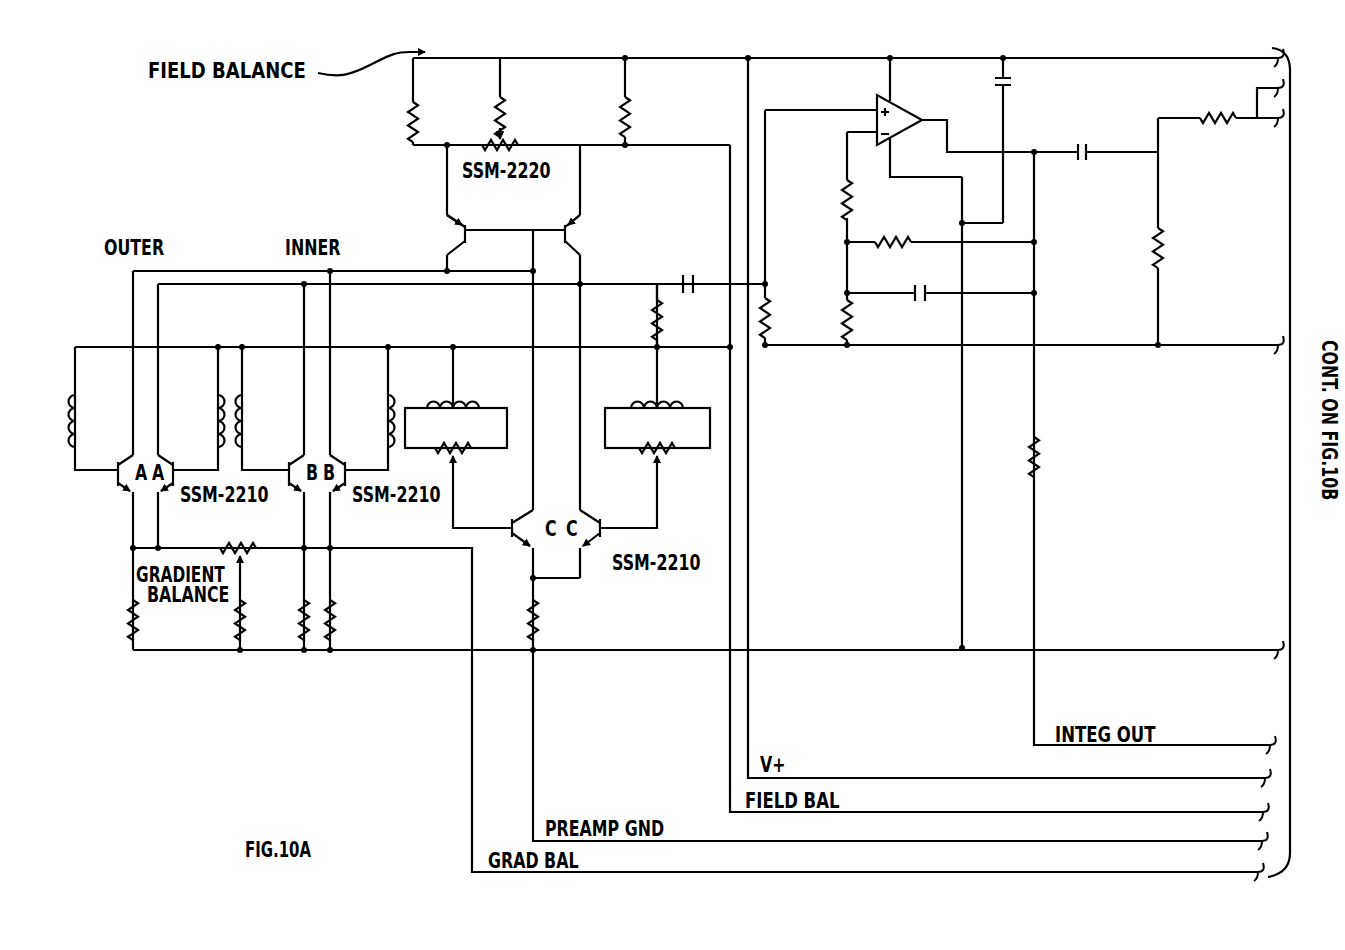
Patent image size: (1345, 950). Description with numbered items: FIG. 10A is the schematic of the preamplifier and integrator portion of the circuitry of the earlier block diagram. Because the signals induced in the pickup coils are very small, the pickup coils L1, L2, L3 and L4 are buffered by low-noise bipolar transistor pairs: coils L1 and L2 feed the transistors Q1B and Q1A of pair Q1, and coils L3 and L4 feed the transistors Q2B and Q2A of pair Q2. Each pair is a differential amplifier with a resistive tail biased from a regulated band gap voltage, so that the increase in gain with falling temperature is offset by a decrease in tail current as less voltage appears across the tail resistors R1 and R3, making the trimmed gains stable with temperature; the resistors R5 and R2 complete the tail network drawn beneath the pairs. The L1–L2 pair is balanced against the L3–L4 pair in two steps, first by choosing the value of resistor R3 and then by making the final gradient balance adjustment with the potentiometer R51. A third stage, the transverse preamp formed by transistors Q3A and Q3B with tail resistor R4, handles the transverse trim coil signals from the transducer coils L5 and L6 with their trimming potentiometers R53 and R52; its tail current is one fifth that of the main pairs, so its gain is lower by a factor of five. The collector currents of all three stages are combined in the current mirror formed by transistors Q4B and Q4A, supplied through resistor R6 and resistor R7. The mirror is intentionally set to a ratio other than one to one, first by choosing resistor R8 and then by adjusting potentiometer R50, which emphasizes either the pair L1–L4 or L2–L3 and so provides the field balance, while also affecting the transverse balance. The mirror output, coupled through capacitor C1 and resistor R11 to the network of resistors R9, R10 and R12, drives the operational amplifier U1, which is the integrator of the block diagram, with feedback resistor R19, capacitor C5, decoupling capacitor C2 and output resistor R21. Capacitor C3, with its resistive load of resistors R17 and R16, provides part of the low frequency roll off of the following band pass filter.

The resistor 499 R6 is at (368, 101).
The resistor 10K 1% R7 is at (547, 98).
The potentiometer R50 is at (535, 118).
The resistor R8 is at (671, 101).
The transistor SSM-2220 Q4B is at (445, 225).
The transistor SSM-2220 Q4A is at (584, 229).
The capacitor C1 is at (701, 258).
The resistor 2.49K R11 is at (667, 315).
The resistor 51.1K R9 is at (818, 227).
The integrator U1 is at (961, 117).
The resistor 51.1K R10 is at (818, 187).
The resistor 1.00M R19 is at (940, 217).
The capacitor .047uF C5 is at (940, 271).
The resistor 499 R12 is at (887, 319).
The capacitor 0.1uF C2 is at (1051, 140).
The capacitor C3 is at (1115, 152).
The resistor 1.2M R17 is at (1218, 120).
The resistor 100K R16 is at (1189, 231).
The resistor 1K R21 is at (1063, 451).
The pickup coil L1 is at (98, 404).
The pickup coil L2 is at (193, 404).
The pickup coil L3 is at (263, 404).
The pickup coil L4 is at (363, 404).
The transistor of pair Q1 Q1B is at (123, 466).
The transistor of pair Q1 Q1A is at (185, 464).
The transistor of pair Q2 Q2B is at (290, 466).
The transistor of pair Q2 Q2A is at (358, 464).
The potentiometer R51 is at (229, 542).
The tail resistor R1 is at (130, 638).
The resistor 200K R5 is at (256, 639).
The tail resistor R3 is at (289, 597).
The resistor 1.10K R2 is at (378, 624).
The transducer A coil L5 is at (456, 406).
The potentiometer 10K R53 is at (472, 463).
The transducer B coil L6 is at (657, 406).
The potentiometer 10K R52 is at (657, 474).
The transistor of transverse preamp Q3 Q3A is at (512, 528).
The transistor of transverse preamp Q3 Q3B is at (613, 531).
The resistor 4990 1% R4 is at (590, 620).